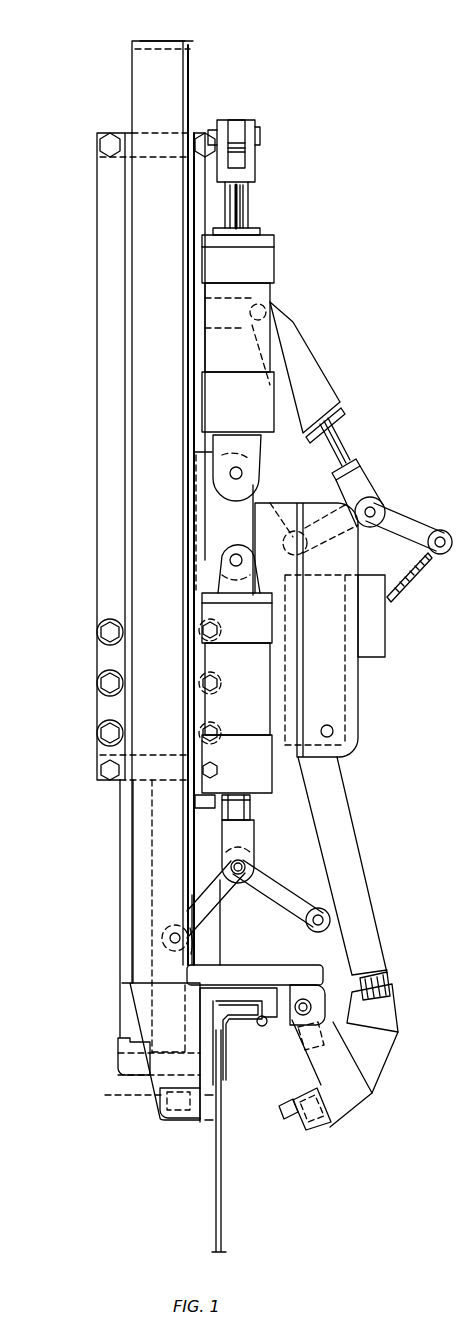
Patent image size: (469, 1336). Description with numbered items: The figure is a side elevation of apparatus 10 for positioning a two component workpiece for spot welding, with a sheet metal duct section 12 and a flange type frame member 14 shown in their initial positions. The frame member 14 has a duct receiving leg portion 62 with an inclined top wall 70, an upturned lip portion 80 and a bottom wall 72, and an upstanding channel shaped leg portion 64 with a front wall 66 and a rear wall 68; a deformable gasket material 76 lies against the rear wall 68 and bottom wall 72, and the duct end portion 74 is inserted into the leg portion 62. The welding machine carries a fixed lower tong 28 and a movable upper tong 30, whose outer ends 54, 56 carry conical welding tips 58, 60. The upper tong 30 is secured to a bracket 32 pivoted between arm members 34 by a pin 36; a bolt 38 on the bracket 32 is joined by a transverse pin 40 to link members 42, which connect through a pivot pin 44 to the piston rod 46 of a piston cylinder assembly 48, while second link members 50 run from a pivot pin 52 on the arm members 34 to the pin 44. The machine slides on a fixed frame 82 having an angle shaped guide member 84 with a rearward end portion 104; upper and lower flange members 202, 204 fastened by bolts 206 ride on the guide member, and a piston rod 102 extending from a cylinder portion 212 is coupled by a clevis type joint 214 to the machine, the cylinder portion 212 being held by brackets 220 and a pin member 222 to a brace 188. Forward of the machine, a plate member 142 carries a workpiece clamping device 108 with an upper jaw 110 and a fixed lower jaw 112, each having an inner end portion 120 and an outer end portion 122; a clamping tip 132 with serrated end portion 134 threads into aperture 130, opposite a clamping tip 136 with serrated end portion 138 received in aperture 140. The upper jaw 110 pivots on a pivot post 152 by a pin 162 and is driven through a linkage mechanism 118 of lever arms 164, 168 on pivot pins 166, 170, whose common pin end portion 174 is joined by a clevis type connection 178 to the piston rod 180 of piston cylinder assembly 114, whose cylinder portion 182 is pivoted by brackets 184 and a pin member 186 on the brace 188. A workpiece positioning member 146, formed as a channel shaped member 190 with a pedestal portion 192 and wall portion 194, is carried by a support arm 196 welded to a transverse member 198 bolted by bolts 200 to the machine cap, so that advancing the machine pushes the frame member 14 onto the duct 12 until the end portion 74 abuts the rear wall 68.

The apparatus 10 is at (92, 88).
The workpiece component 12 is at (223, 1222).
The workpiece component 14 is at (262, 1018).
The lower spot welding tong 28 is at (118, 945).
The upper tong 30 is at (340, 770).
The bracket 32 is at (390, 622).
The arm members 34 is at (342, 757).
The pin 36 is at (333, 730).
The bolt 38 is at (422, 566).
The transverse pin 40 is at (441, 538).
The link members 42 is at (410, 522).
The pivot pin 44 is at (374, 506).
The piston rod 46 is at (340, 445).
The piston cylinder assembly 48 is at (300, 342).
The link members 50 is at (318, 528).
The pivot pin 52 is at (290, 538).
The outer end 54 is at (124, 1075).
The outer end 56 is at (396, 1030).
The spot welding tip 58 is at (125, 1062).
The spot welding tip 60 is at (312, 1048).
The duct receiving leg portion 62 is at (232, 1040).
The channel shaped leg portion 64 is at (266, 985).
The front wall 66 is at (240, 1030).
The rear wall 68 is at (256, 1025).
The inclined top wall 70 is at (235, 1050).
The bottom wall 72 is at (210, 1034).
The duct end portion 74 is at (222, 1012).
The gasket material 76 is at (230, 1006).
The upturned lip portion 80 is at (236, 1060).
The fixed frame 82 is at (197, 72).
The guide member 84 is at (136, 80).
The piston rod 102 is at (250, 206).
The rearward end portion 104 is at (160, 40).
The workpiece clamping device 108 is at (352, 1122).
The upper jaw 110 is at (374, 1093).
The lower jaw 112 is at (170, 1128).
The piston cylinder assembly 114 is at (206, 653).
The linkage mechanism 118 is at (356, 870).
The inner end portion 120 is at (340, 930).
The outer end portion 122 is at (160, 1110).
The threaded vertical aperture 130 is at (326, 1125).
The clamping tip 132 is at (302, 1130).
The serrated end portion 134 is at (286, 1130).
The clamping tip 136 is at (206, 1125).
The serrated end portion 138 is at (218, 1140).
The aperture 140 is at (160, 1095).
The plate member 142 is at (302, 972).
The workpiece positioning member 146 is at (280, 975).
The pivot post 152 is at (312, 998).
The pin 162 is at (352, 1017).
The lever arms 164 is at (300, 874).
The pivot pin 166 is at (330, 920).
The lever arms 168 is at (216, 872).
The pivot pin 170 is at (170, 938).
The end portion 174 is at (230, 868).
The clevis type connection 178 is at (254, 832).
The piston rod 180 is at (252, 810).
The cylinder portion 182 is at (216, 712).
The brackets 184 is at (220, 545).
The pin member 186 is at (230, 559).
The brace 188 is at (206, 500).
The channel shaped member 190 is at (268, 985).
The pedestal portion 192 is at (208, 990).
The wall portion 194 is at (246, 988).
The support arm 196 is at (196, 830).
The transverse member 198 is at (200, 790).
The bolts 200 is at (196, 803).
The flange member 202 is at (205, 191).
The flange member 204 is at (100, 177).
The bolts 206 is at (107, 140).
The cylinder portion 212 is at (270, 252).
The clevis type joint 214 is at (262, 165).
The brackets 220 is at (210, 445).
The pin member 222 is at (242, 472).